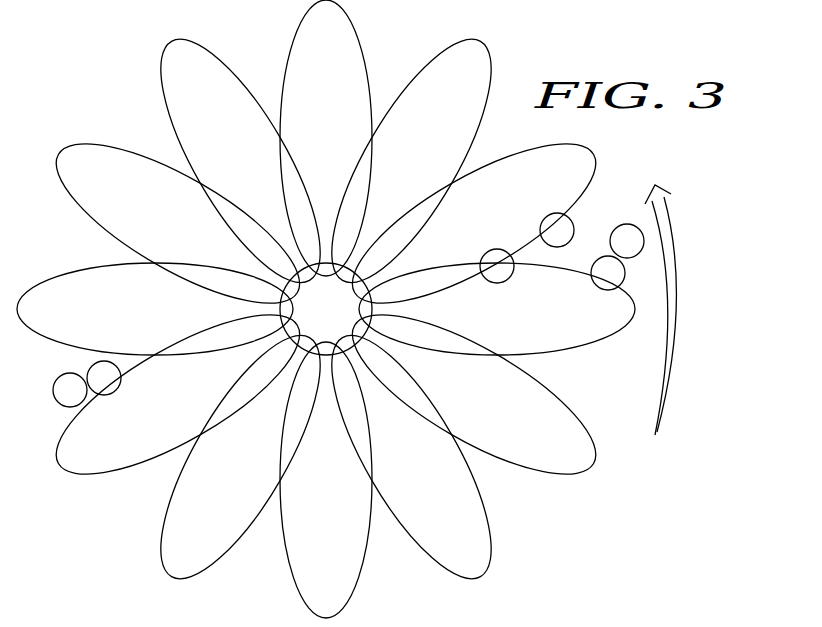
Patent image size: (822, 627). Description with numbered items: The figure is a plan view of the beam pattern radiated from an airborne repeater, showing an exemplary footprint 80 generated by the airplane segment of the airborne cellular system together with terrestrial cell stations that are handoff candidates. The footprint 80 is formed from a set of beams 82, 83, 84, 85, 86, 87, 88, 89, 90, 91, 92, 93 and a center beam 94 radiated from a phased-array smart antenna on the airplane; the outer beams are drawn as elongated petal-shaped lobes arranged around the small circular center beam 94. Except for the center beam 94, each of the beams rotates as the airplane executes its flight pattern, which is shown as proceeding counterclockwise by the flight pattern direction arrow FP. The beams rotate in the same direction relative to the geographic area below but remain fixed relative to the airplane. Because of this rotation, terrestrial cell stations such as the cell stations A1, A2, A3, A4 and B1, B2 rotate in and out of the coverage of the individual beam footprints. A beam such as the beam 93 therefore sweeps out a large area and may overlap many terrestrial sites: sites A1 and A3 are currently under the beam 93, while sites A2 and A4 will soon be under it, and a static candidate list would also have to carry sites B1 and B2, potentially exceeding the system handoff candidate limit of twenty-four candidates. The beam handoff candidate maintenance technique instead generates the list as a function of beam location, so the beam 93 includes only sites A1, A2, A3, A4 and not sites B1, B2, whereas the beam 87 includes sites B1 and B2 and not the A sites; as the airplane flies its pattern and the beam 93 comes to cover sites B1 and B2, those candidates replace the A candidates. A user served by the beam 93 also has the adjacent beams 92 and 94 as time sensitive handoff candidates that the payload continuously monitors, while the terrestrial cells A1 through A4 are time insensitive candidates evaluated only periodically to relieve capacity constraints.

The footprint 80 is at (103, 92).
The beam 82 is at (465, 232).
The beam 83 is at (401, 171).
The beam 84 is at (313, 147).
The beam 85 is at (226, 172).
The beam 86 is at (163, 232).
The beam 87 is at (138, 316).
The beam 88 is at (162, 402).
The beam 89 is at (226, 467).
The beam 90 is at (314, 491).
The beam 91 is at (402, 467).
The beam 92 is at (464, 402).
The beam 93 is at (486, 316).
The center beam 94 is at (315, 322).
The terrestrial cell station A1 is at (497, 266).
The terrestrial cell station A2 is at (557, 230).
The terrestrial cell station A3 is at (608, 273).
The terrestrial cell station A4 is at (627, 241).
The terrestrial cell station B1 is at (70, 390).
The terrestrial cell station B2 is at (104, 378).
The flight pattern direction arrow FP is at (683, 310).